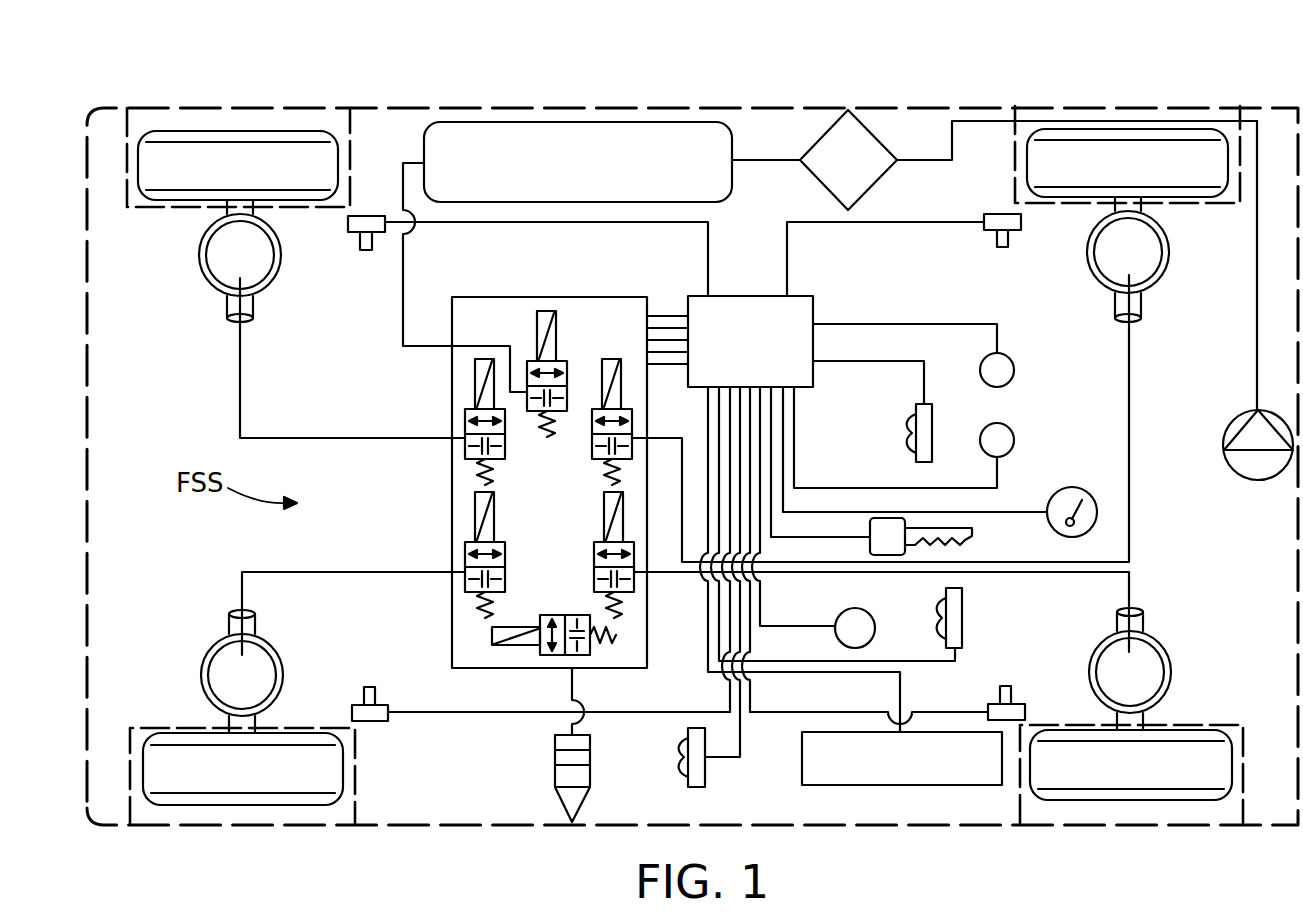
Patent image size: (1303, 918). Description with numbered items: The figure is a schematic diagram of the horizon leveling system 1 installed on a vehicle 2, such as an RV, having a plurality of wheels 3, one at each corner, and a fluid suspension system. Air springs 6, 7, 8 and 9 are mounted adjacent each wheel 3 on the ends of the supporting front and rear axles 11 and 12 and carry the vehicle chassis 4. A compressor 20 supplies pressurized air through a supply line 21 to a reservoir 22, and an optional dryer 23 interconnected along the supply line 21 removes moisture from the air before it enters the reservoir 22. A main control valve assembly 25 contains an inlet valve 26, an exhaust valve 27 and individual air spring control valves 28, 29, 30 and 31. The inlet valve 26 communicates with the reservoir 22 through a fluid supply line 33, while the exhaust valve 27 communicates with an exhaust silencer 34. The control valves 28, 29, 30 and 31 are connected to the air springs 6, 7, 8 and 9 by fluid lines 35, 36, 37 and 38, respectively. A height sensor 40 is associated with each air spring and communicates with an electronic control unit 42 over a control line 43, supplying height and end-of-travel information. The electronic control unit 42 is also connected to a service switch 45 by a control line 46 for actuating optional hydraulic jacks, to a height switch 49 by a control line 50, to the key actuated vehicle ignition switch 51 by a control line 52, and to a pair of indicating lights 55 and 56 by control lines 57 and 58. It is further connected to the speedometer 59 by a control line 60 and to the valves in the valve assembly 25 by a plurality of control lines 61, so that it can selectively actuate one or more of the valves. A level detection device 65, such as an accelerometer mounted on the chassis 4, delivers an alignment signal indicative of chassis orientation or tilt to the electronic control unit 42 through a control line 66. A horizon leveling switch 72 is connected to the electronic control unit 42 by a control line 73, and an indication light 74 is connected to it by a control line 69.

The horizon leveling system 1 is at (778, 125).
The vehicle 2 is at (1155, 66).
The wheels 3 is at (152, 165).
The vehicle chassis 4 is at (410, 100).
The air spring 6 is at (210, 250).
The air spring 7 is at (1150, 250).
The air spring 8 is at (220, 677).
The air spring 9 is at (1152, 678).
The front axle 11 is at (1145, 620).
The rear axle 12 is at (228, 313).
The compressor 20 is at (1243, 472).
The supply line 21 is at (1256, 322).
The reservoir 22 is at (715, 203).
The dryer 23 is at (875, 136).
The main control valve assembly 25 is at (443, 623).
The inlet valve 26 is at (540, 311).
The exhaust valve 27 is at (568, 615).
The air spring control valve 28 is at (478, 400).
The air spring control valve 29 is at (620, 393).
The air spring control valve 30 is at (478, 525).
The air spring control valve 31 is at (605, 525).
The fluid supply line 33 is at (402, 320).
The exhaust silencer 34 is at (555, 770).
The fluid line 35 is at (240, 380).
The fluid line 36 is at (1130, 390).
The fluid line 37 is at (300, 572).
The fluid line 38 is at (1050, 575).
The height sensor 40 is at (356, 216).
The electronic control unit 42 is at (805, 297).
The control line 43 is at (500, 224).
The service switch 45 is at (676, 757).
The control line 46 is at (735, 762).
The height switch 49 is at (905, 440).
The control line 50 is at (848, 362).
The vehicle ignition switch 51 is at (888, 538).
The control line 52 is at (800, 537).
The indicating light 55 is at (1000, 372).
The indicating light 56 is at (1000, 440).
The control line 57 is at (912, 324).
The control line 58 is at (938, 486).
The speedometer 59 is at (1065, 498).
The control line 60 is at (995, 515).
The control lines 61 is at (664, 295).
The level detection device 65 is at (912, 785).
The control line 66 is at (903, 690).
The control line 69 is at (818, 622).
The horizon leveling switch 72 is at (962, 612).
The control line 73 is at (925, 655).
The indication light 74 is at (853, 612).